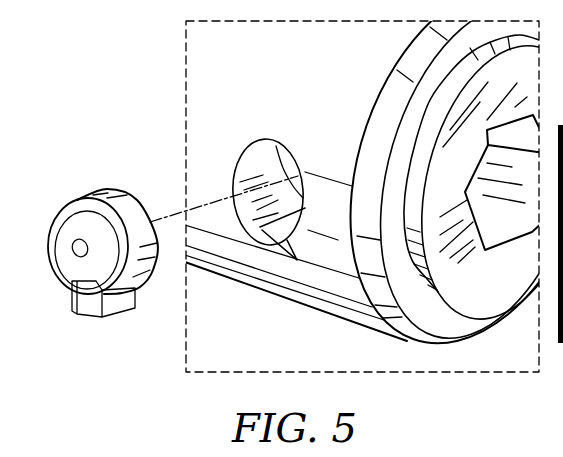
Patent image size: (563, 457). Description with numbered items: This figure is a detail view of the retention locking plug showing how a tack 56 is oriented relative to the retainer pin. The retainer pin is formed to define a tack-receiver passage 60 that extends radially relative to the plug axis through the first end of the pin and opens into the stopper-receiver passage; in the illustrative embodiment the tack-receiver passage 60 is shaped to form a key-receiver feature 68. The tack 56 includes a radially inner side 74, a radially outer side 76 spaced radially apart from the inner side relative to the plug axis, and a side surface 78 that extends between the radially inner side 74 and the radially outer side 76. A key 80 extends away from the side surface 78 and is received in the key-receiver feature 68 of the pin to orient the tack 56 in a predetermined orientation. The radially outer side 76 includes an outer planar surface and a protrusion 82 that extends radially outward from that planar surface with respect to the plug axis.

The tack 56 is at (87, 132).
The side surface 78 is at (92, 190).
The radially inner side 74 is at (141, 195).
The radially outer side 76 is at (50, 273).
The protrusion 82 is at (80, 255).
The key 80 is at (101, 327).
The tack-receiver passage 60 is at (251, 170).
The key-receiver feature 68 is at (265, 246).